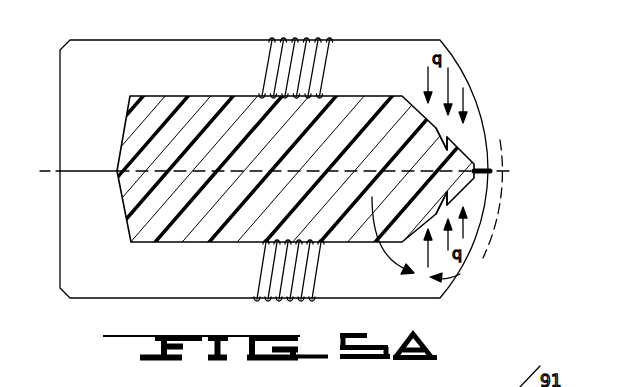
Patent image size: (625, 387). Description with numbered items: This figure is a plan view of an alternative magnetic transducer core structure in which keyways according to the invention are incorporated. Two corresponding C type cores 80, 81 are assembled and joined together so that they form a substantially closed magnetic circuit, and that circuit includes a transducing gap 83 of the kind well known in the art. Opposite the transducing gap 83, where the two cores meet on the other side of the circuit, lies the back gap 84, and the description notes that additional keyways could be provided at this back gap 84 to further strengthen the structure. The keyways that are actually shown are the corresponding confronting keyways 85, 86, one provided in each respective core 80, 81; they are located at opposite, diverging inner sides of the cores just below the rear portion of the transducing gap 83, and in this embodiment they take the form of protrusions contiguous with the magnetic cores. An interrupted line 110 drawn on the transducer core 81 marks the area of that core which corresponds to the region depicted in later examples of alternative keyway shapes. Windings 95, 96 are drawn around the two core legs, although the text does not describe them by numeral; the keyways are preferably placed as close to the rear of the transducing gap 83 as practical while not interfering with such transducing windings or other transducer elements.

The C type core 80 is at (193, 42).
The C type core 81 is at (183, 243).
The transducing gap 83 is at (492, 170).
The back gap 84 is at (61, 171).
The keyway 85 is at (437, 136).
The keyway 86 is at (438, 205).
The upper coil 95 is at (297, 48).
The lower coil 96 is at (308, 241).
The interrupted line 110 is at (259, 136).